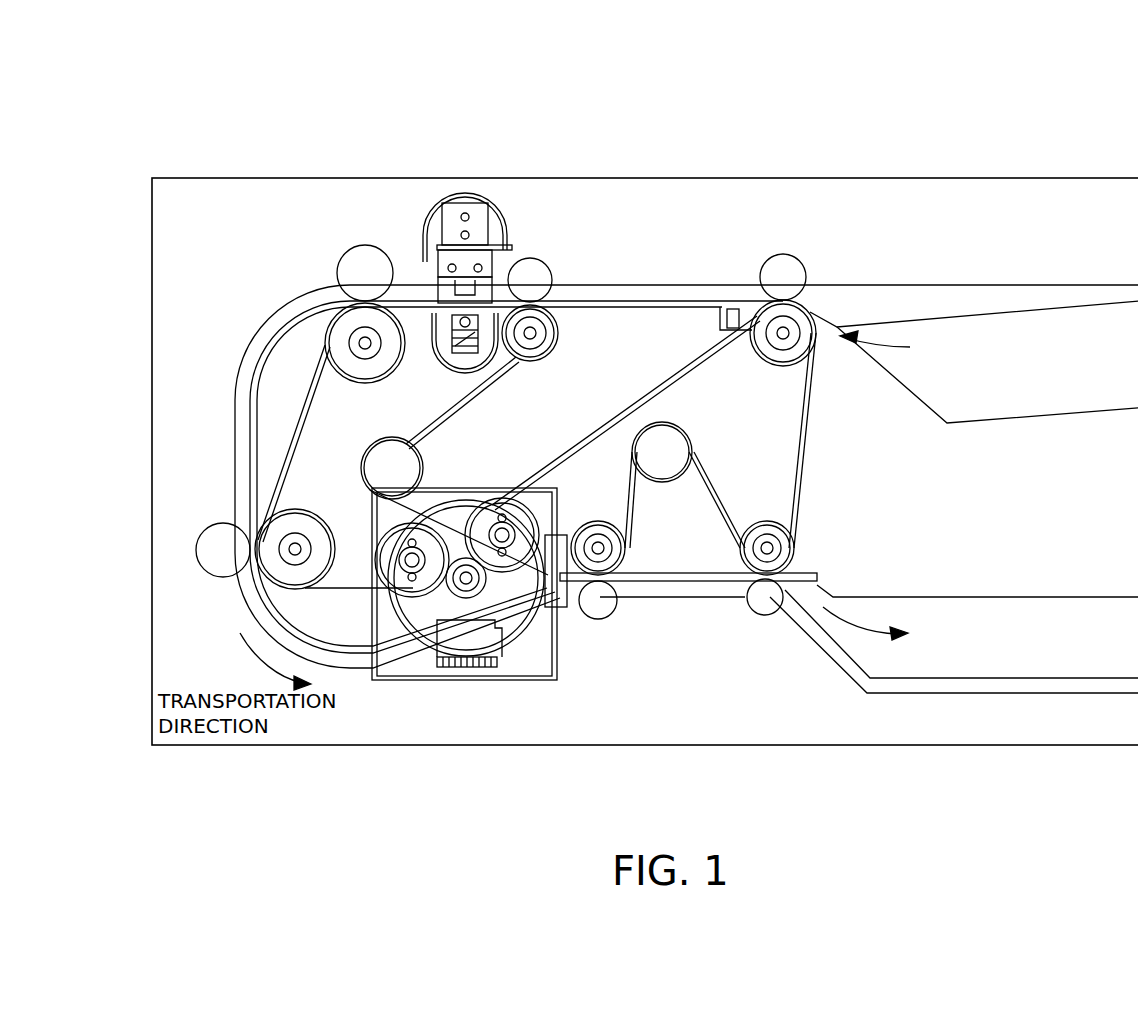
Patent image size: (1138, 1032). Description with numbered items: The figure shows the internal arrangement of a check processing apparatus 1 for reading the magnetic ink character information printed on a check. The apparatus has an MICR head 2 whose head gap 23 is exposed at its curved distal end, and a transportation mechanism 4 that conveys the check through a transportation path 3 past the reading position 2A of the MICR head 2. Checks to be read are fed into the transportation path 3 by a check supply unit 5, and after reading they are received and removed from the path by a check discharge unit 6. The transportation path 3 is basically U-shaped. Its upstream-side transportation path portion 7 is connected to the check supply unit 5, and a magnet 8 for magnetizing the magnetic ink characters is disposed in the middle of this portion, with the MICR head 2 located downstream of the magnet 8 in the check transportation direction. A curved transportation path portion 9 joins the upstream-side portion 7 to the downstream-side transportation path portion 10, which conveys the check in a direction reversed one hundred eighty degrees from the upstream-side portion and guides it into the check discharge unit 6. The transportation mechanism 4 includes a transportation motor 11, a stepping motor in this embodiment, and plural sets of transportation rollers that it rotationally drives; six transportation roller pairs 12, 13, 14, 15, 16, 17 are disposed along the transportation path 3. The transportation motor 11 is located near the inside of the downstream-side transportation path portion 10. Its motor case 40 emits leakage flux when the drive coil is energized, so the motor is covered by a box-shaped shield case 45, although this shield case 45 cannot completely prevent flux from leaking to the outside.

The check processing apparatus 1 is at (798, 150).
The MICR head 2 is at (508, 255).
The reading position 2A is at (440, 342).
The transportation path 3 is at (256, 345).
The transportation mechanism 4 is at (387, 700).
The check supply unit 5 is at (880, 330).
The check discharge unit 6 is at (842, 628).
The upstream-side transportation path portion 7 is at (648, 300).
The magnet 8 is at (735, 308).
The curved transportation path portion 9 is at (248, 612).
The downstream-side transportation path portion 10 is at (652, 583).
The transportation motor 11 is at (513, 650).
The transportation roller pair 12 is at (806, 315).
The transportation roller pair 13 is at (546, 345).
The transportation roller pair 14 is at (327, 324).
The transportation roller pair 15 is at (258, 540).
The transportation roller pair 16 is at (611, 614).
The transportation roller pair 17 is at (792, 540).
The head gap 23 is at (498, 350).
The motor case 40 is at (415, 598).
The shield case 45 is at (424, 690).